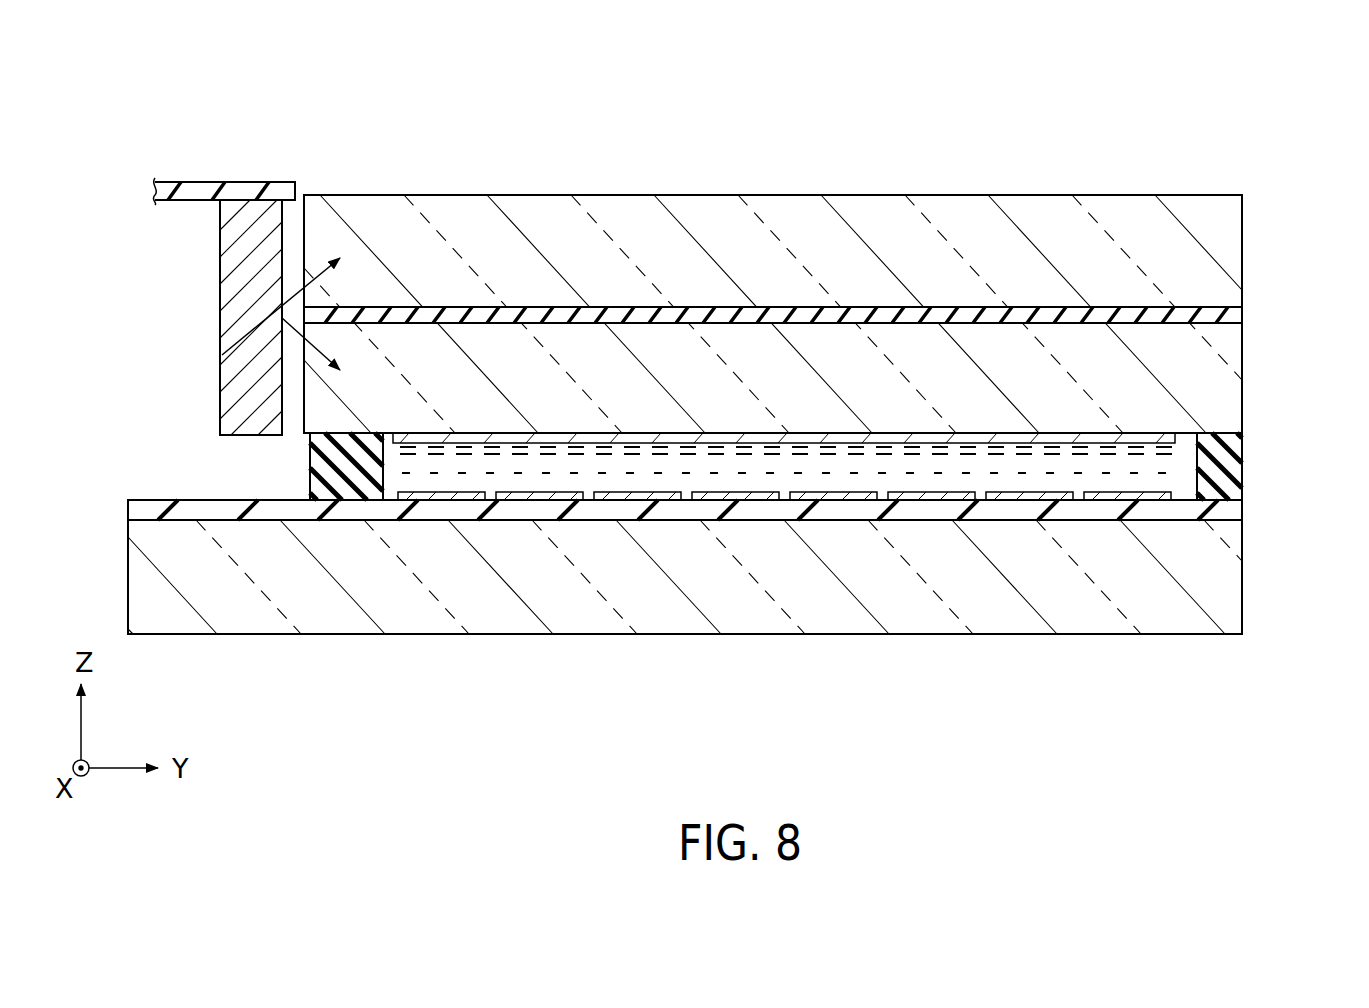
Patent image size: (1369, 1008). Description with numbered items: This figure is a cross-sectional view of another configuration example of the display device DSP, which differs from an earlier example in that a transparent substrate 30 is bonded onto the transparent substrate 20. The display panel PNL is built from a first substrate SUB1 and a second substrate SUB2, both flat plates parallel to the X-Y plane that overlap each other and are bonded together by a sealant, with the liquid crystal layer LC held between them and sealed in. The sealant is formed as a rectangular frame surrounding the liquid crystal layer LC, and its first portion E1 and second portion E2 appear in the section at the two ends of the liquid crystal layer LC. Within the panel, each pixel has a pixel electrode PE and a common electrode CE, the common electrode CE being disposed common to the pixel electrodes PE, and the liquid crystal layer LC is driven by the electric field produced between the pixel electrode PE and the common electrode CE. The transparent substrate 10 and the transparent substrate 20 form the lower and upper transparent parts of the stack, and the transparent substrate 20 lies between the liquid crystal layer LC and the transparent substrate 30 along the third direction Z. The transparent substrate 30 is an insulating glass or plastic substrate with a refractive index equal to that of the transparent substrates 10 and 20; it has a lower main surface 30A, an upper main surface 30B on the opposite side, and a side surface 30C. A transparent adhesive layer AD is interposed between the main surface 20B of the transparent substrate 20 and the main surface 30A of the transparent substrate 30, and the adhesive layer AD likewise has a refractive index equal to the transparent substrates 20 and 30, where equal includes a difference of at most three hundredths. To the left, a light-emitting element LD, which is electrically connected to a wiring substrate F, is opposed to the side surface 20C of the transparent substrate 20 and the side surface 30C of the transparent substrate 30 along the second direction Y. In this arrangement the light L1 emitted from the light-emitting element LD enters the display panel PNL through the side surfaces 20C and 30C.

The display device DSP is at (1196, 140).
The display panel PNL is at (988, 640).
The transparent substrate 10 is at (828, 636).
The first substrate SUB1 is at (1252, 611).
The transparent substrate 20 is at (975, 342).
The second substrate SUB2 is at (1252, 358).
The main surface 20B is at (668, 304).
The side surface 20C is at (302, 388).
The transparent substrate 30 is at (1043, 208).
The main surface 30A is at (815, 326).
The main surface 30B is at (869, 191).
The side surface 30C is at (302, 238).
The adhesive layer AD is at (1236, 315).
The light-emitting element LD is at (232, 275).
The wiring substrate F is at (190, 189).
The light L1 is at (306, 352).
The first portion E1 is at (322, 470).
The second portion E2 is at (1235, 474).
The pixel electrode PE is at (610, 502).
The common electrode CE is at (735, 445).
The liquid crystal layer LC is at (668, 476).